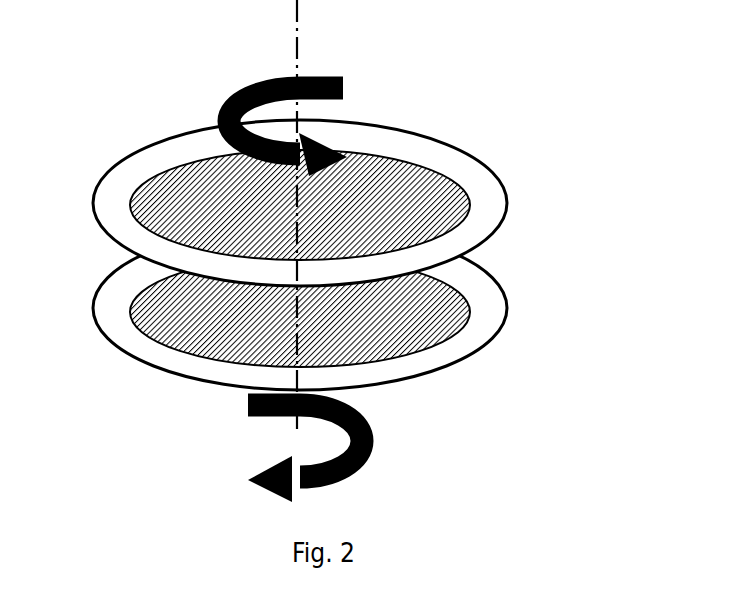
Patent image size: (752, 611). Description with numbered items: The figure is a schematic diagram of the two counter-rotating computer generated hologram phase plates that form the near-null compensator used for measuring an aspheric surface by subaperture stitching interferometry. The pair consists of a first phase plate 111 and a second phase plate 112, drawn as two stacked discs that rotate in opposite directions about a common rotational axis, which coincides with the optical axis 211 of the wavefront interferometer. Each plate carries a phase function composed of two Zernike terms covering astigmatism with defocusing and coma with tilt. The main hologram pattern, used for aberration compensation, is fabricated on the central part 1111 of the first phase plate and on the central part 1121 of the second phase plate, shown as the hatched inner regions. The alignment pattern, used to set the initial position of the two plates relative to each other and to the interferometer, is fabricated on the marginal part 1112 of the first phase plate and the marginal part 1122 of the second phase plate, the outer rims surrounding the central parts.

The first phase plate 111 is at (321, 166).
The central part of the first phase plate 1111 is at (367, 168).
The marginal part of the first phase plate 1112 is at (470, 175).
The second phase plate 112 is at (340, 347).
The central part of the second phase plate 1121 is at (373, 338).
The marginal part of the second phase plate 1122 is at (468, 340).
The optical axis 211 is at (305, 65).